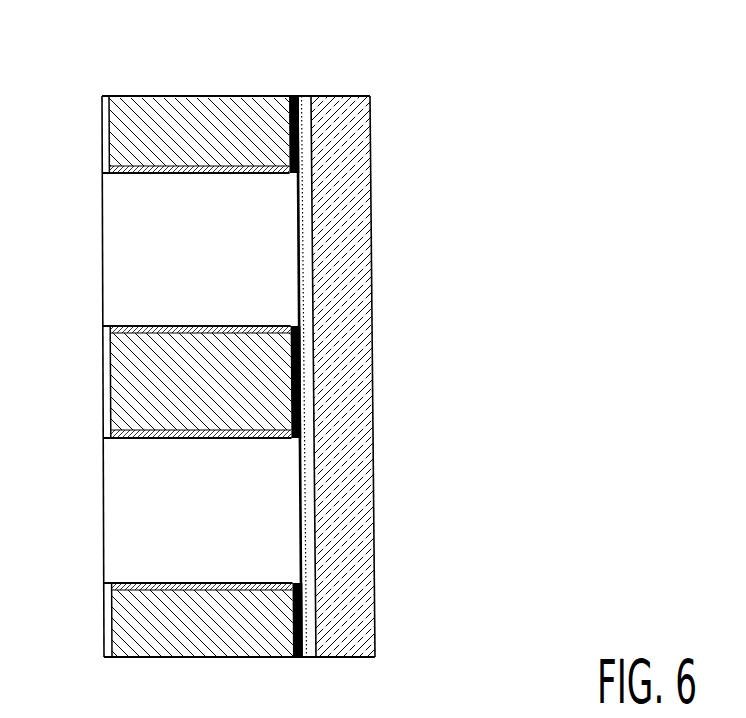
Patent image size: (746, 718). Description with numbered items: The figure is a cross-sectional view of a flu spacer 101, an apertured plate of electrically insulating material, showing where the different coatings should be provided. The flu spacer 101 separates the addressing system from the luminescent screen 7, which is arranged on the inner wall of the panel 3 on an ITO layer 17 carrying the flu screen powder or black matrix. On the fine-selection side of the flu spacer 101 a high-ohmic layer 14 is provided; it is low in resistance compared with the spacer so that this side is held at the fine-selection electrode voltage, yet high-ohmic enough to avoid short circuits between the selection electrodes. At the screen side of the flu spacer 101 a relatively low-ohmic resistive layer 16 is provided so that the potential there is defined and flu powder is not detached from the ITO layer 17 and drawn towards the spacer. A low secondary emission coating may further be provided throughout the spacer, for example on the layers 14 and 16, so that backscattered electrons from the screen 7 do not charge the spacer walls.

The panel 3 is at (372, 396).
The luminescent screen 7 is at (300, 103).
The high-ohmic layer 14 is at (102, 117).
The resistive layer 16 is at (295, 327).
The ITO layer 17 is at (320, 635).
The flu spacer 101 is at (190, 107).